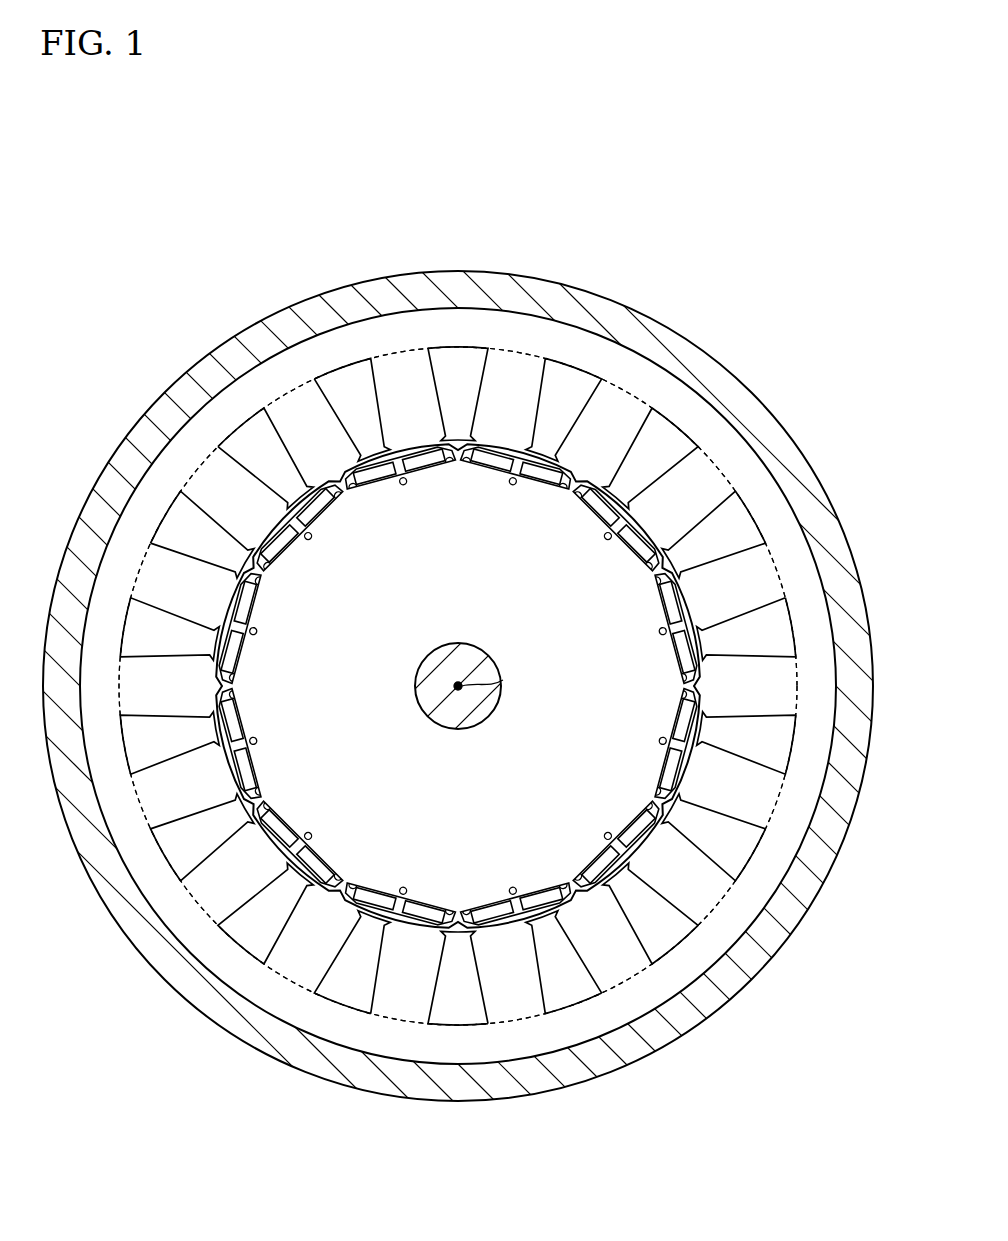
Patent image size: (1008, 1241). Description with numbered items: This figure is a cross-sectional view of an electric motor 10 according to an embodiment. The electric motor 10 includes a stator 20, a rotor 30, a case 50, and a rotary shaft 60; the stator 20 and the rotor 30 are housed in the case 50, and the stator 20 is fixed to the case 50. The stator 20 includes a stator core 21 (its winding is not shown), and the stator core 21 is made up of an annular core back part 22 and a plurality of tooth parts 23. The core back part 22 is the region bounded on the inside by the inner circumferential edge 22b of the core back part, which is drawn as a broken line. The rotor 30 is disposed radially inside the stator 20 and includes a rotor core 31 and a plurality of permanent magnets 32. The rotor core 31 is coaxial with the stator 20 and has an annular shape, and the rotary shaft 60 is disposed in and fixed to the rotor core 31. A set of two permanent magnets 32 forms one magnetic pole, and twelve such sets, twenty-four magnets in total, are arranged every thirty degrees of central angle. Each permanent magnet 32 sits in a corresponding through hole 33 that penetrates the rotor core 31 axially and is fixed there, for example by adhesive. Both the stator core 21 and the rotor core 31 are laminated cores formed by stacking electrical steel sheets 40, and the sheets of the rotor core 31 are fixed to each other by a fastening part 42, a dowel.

The electric motor 10 is at (757, 173).
The stator 20 is at (745, 431).
The stator core 21 is at (557, 232).
The core back part 22 is at (647, 352).
The inner circumferential edge of the core back part 22b is at (389, 348).
The tooth parts 23 is at (584, 258).
The rotor 30 is at (278, 689).
The rotor core 31 is at (356, 870).
The permanent magnets 32 is at (543, 480).
The through holes 33 is at (478, 915).
The electrical steel sheets 40 is at (240, 397).
The fastening part 42 is at (312, 540).
The case 50 is at (797, 471).
The rotary shaft 60 is at (488, 702).